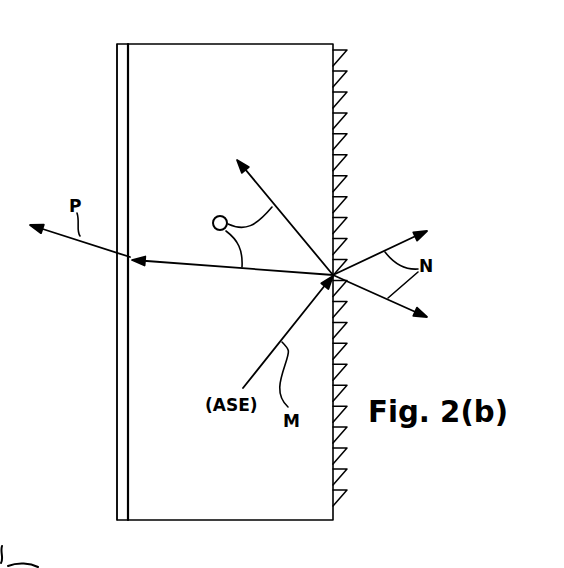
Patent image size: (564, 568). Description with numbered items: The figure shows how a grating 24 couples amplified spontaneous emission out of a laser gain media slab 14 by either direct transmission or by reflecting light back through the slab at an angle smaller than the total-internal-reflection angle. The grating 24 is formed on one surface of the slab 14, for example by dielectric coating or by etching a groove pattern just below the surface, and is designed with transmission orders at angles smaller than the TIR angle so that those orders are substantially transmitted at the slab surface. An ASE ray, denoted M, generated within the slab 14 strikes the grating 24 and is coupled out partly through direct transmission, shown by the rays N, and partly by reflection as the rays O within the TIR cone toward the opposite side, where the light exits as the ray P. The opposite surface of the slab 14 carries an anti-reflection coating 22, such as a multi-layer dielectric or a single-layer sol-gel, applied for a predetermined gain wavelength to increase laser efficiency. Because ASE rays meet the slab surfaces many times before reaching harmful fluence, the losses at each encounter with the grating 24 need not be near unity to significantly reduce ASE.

The slab 14 is at (205, 65).
The anti-reflection coating 22 is at (122, 130).
The grating 24 is at (336, 110).